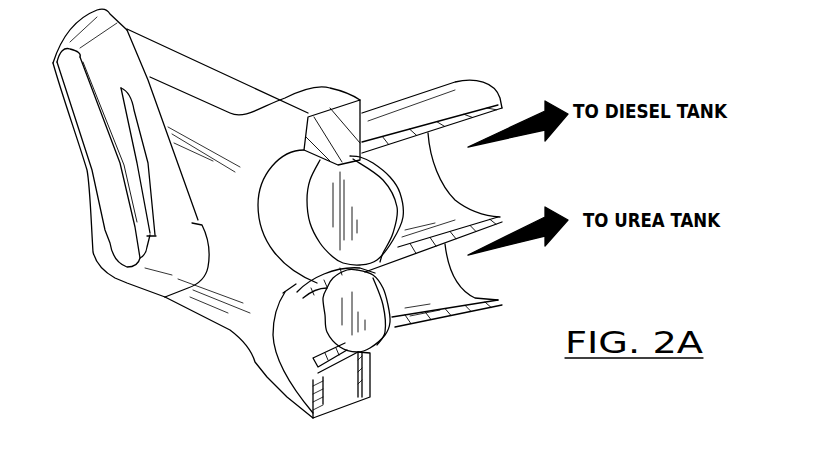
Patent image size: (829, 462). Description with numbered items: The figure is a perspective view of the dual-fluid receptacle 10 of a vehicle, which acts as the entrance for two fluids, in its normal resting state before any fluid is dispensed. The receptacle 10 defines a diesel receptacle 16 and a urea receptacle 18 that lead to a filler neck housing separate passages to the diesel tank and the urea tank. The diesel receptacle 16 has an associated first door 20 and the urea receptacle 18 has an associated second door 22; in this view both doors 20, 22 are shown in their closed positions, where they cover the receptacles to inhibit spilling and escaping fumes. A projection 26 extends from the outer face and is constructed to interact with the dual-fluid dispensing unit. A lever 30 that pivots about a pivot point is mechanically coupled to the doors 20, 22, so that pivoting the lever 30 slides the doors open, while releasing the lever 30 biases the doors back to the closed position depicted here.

The dual-fluid receptacle 10 is at (513, 62).
The diesel receptacle 16 is at (300, 242).
The urea receptacle 18 is at (317, 318).
The first door 20 is at (373, 218).
The second door 22 is at (370, 313).
The projection 26 is at (283, 296).
The lever 30 is at (84, 118).